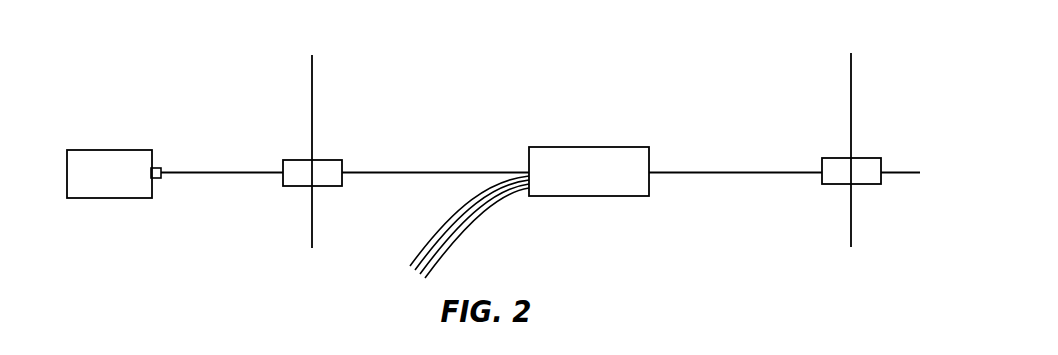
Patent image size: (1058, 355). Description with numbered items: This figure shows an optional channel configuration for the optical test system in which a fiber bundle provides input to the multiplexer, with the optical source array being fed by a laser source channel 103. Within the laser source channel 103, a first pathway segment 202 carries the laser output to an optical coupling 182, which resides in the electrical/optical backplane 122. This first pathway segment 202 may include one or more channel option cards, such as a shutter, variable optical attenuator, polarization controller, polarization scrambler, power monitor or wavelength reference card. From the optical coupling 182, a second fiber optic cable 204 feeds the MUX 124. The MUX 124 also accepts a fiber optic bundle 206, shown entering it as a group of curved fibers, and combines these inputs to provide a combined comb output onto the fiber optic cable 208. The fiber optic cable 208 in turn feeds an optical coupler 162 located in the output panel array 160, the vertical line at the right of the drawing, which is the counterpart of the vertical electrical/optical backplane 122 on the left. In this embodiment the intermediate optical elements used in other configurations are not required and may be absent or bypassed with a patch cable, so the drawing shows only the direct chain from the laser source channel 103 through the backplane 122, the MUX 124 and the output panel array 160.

The laser source channel 103 is at (118, 150).
The first pathway segment 202 is at (213, 172).
The optical coupling 182 is at (295, 160).
The electrical/optical backplane 122 is at (312, 68).
The second fiber optic cable 204 is at (421, 172).
The MUX 124 is at (637, 147).
The fiber optic bundle 206 is at (481, 217).
The fiber optic cable 208 is at (755, 170).
The output panel array 160 is at (852, 67).
The optical coupler 162 is at (878, 158).